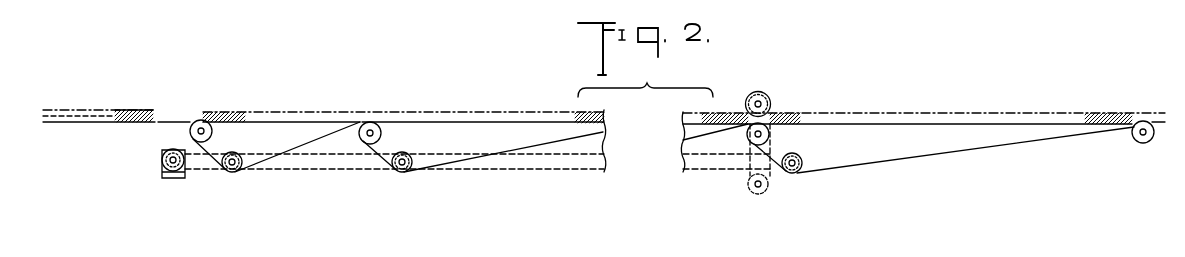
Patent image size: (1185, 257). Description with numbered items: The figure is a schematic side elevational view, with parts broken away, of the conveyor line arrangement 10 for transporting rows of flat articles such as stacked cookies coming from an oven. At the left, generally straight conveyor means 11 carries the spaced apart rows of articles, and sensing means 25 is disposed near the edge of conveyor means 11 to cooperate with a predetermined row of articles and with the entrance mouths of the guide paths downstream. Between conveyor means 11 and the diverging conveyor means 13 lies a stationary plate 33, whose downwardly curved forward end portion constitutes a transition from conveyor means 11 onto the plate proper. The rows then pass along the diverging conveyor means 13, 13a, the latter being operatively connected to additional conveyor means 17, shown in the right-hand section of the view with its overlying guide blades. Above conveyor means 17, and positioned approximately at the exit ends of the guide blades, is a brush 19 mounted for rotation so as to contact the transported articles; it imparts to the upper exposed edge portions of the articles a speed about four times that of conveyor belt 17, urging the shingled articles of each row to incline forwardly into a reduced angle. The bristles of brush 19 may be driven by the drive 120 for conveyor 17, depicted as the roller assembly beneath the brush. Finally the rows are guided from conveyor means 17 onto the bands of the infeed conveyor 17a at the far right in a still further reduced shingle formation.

The conveyor line arrangement 10 is at (97, 106).
The sensing means 25 is at (70, 124).
The straight conveyor means 11 is at (148, 124).
The stationary plate 33 is at (176, 121).
The diverging conveyor means 13 is at (295, 121).
The diverging conveyor means 13a is at (440, 121).
The additional conveyor means 17 is at (898, 122).
The brush means 19 is at (771, 97).
The drive 120 is at (748, 148).
The infeed conveyor 17a is at (1146, 142).